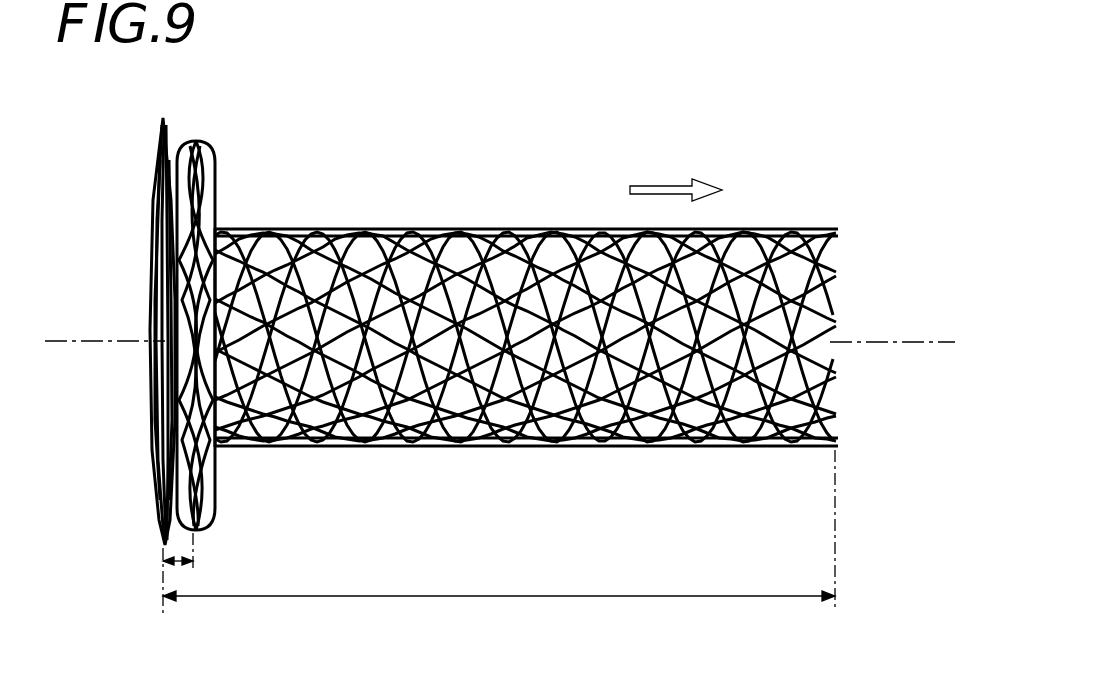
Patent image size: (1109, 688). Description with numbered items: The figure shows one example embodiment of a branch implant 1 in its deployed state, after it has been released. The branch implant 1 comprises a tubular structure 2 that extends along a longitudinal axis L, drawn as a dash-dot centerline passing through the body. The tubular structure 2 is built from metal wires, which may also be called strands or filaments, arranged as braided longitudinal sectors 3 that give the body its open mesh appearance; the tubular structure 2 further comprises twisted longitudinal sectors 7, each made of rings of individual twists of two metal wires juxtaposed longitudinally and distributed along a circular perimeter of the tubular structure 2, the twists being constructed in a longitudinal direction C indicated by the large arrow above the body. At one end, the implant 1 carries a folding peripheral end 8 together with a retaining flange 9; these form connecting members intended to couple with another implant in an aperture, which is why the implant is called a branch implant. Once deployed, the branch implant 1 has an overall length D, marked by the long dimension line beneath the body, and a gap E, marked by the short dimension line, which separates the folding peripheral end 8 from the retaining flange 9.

The implant 1 is at (759, 192).
The tubular structure 2 is at (553, 223).
The braided longitudinal sectors 3 is at (229, 216).
The twisted longitudinal sectors 7 is at (271, 452).
The folding peripheral end 8 is at (167, 118).
The retaining flange 9 is at (196, 141).
The longitudinal axis L is at (880, 345).
The longitudinal direction C is at (676, 175).
The overall length D is at (478, 600).
The gap E is at (194, 572).